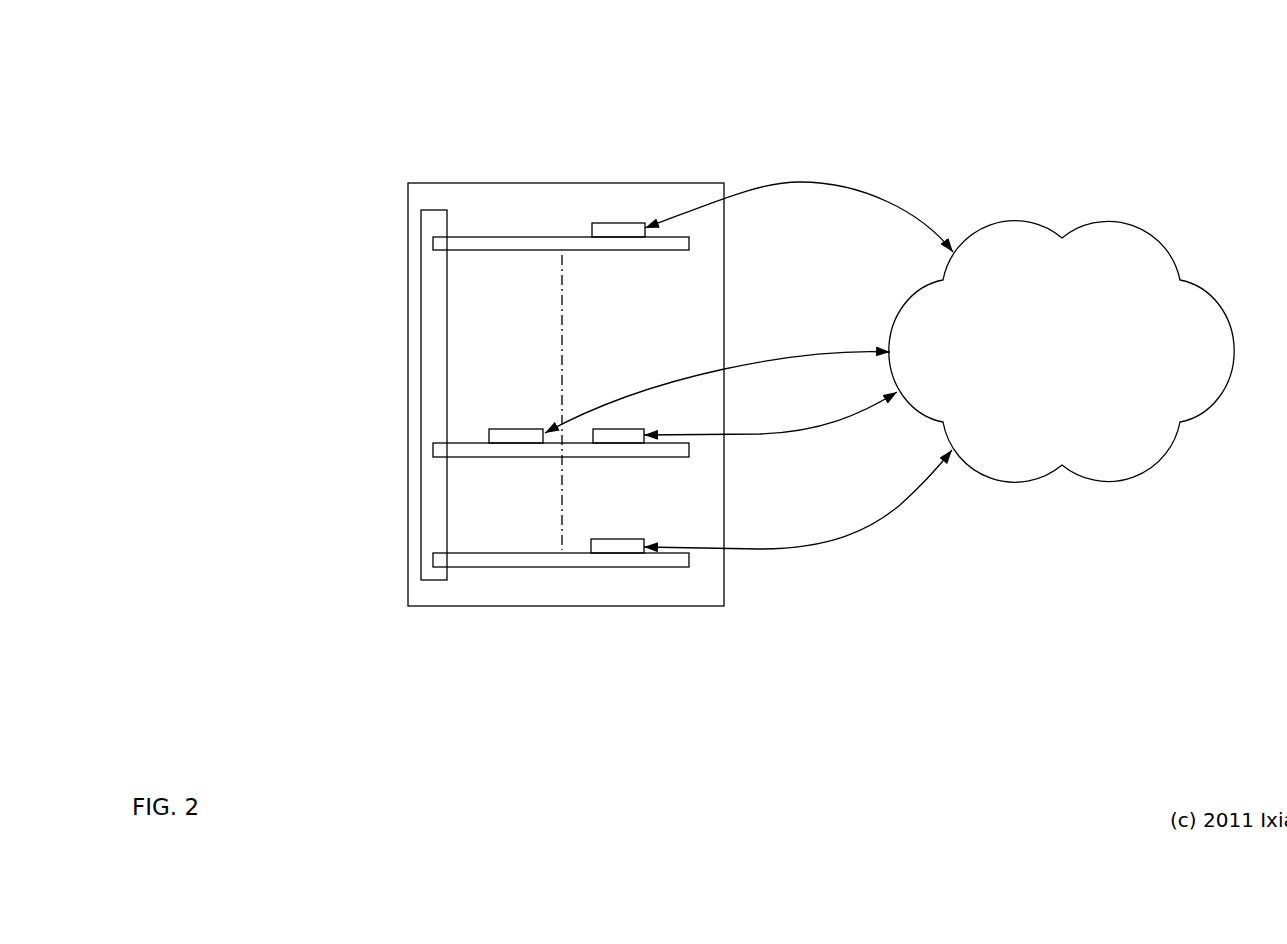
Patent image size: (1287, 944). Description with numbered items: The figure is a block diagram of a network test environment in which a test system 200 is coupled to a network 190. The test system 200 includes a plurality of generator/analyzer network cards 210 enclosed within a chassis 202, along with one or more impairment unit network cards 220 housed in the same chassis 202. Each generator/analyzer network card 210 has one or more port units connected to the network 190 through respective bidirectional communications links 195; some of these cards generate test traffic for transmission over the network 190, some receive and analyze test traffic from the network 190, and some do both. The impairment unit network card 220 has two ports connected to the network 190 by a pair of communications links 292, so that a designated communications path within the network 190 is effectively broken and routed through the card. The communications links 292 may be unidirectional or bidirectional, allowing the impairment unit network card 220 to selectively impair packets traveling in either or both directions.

The test system 200 is at (473, 103).
The chassis 202 is at (623, 183).
The generator/analyzer network card 210 is at (475, 236).
The impairment unit network card 220 is at (475, 443).
The network 190 is at (1061, 352).
The bidirectional communications link 195 is at (852, 185).
The communications link 292 is at (788, 432).